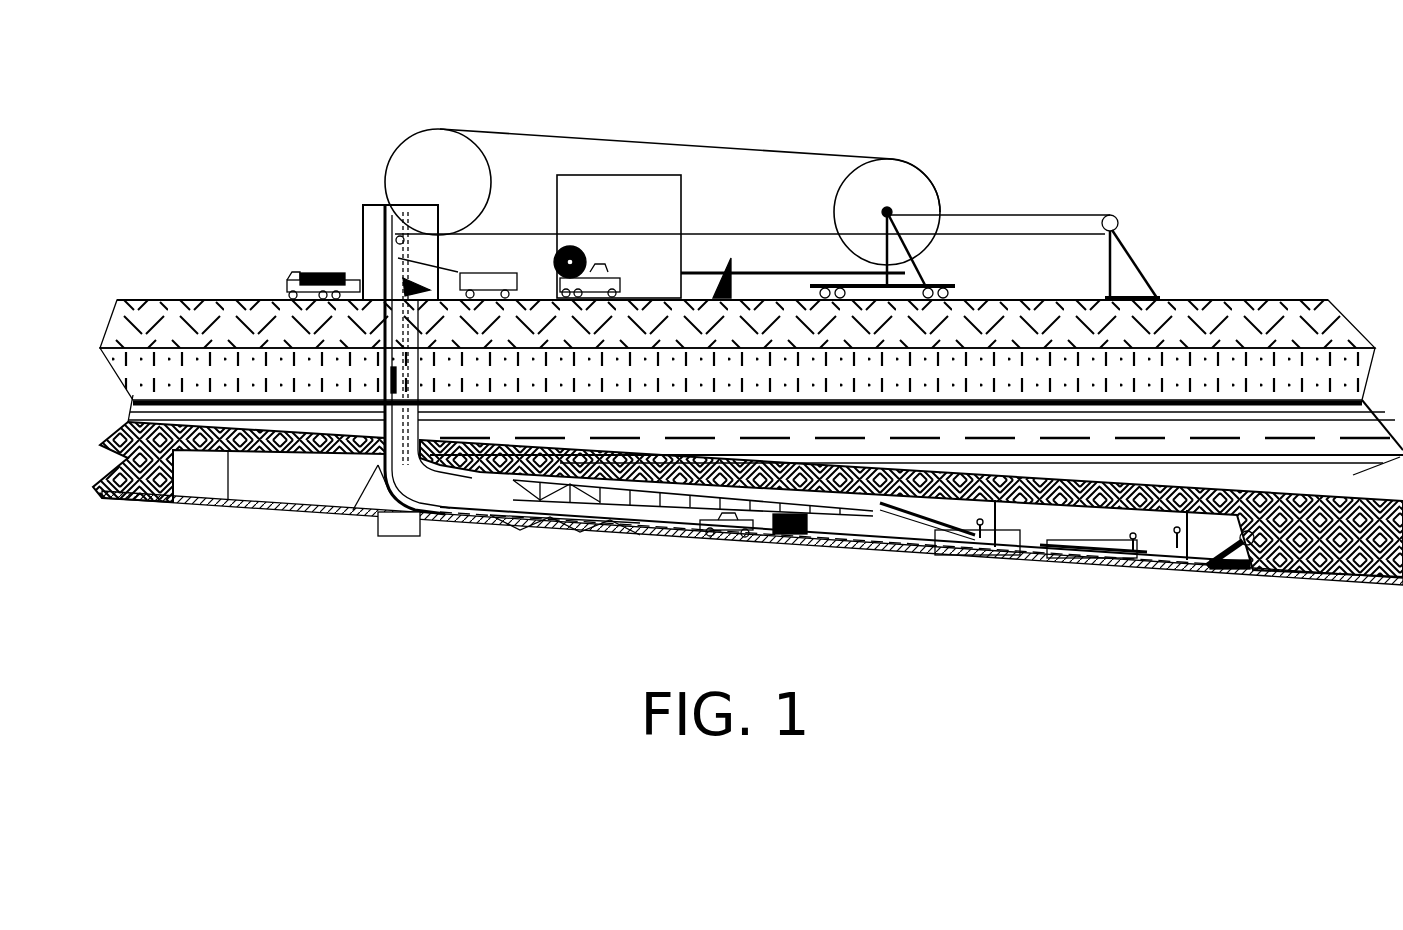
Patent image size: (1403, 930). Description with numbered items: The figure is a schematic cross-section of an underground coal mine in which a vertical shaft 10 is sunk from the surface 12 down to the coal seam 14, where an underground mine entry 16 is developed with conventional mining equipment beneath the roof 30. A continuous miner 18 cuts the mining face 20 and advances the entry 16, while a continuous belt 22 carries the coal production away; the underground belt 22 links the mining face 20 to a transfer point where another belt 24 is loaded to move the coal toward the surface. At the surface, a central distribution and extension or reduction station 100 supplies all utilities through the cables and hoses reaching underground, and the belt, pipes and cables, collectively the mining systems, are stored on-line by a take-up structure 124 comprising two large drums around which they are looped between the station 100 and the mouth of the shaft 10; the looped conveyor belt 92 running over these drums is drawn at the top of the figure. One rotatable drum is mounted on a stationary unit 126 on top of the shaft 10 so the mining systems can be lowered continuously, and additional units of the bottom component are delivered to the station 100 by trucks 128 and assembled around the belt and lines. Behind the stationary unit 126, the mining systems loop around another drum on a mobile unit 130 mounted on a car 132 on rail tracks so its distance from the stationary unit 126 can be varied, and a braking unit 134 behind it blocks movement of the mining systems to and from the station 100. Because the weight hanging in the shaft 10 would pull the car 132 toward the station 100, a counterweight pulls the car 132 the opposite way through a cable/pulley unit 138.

The vertical shaft 10 is at (373, 398).
The surface 12 is at (258, 298).
The coal seam 14 is at (147, 485).
The underground mine entry 16 is at (282, 478).
The continuous miner 18 is at (1163, 570).
The mining face 20 is at (1243, 580).
The continuous belt 22 is at (863, 512).
The belt 24 is at (445, 522).
The roof 30 is at (1070, 510).
The conveyor belt 92 is at (696, 143).
The central distribution and extension or reduction station 100 is at (681, 203).
The take-up structure 124 is at (836, 131).
The stationary unit 126 is at (430, 150).
The trucks 128 is at (310, 270).
The mobile unit 130 is at (910, 197).
The car 132 is at (933, 287).
The braking unit 134 is at (730, 283).
The cable/pulley unit 138 is at (1143, 270).